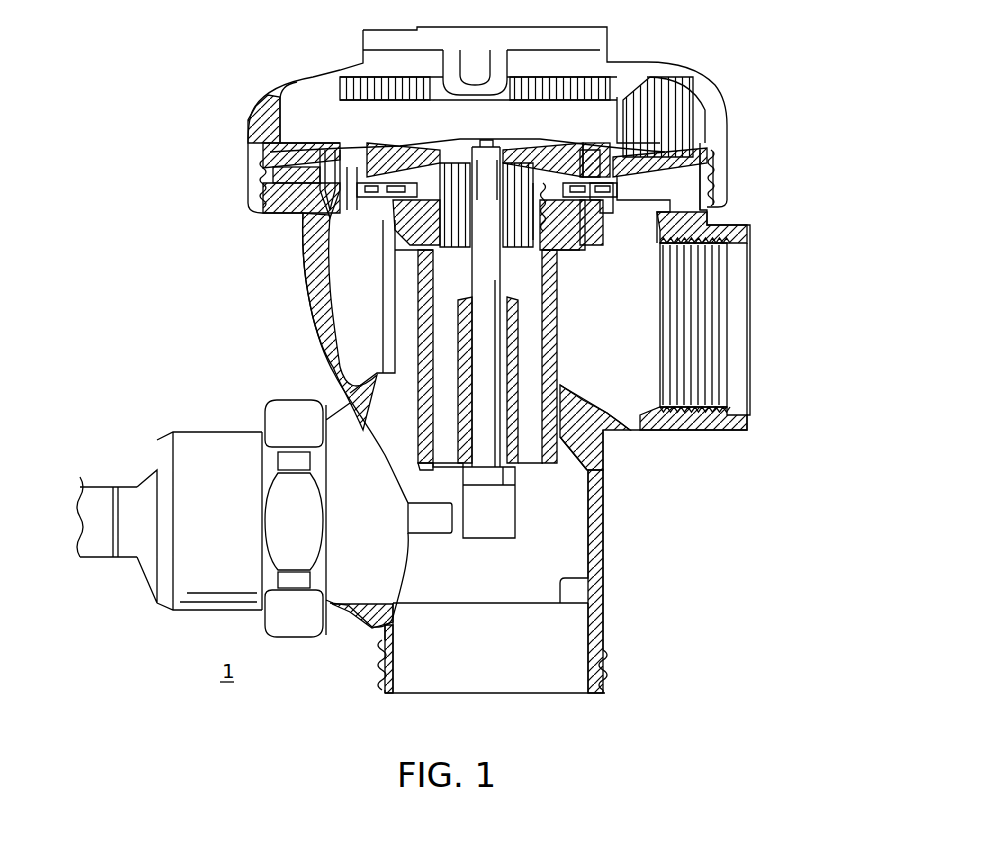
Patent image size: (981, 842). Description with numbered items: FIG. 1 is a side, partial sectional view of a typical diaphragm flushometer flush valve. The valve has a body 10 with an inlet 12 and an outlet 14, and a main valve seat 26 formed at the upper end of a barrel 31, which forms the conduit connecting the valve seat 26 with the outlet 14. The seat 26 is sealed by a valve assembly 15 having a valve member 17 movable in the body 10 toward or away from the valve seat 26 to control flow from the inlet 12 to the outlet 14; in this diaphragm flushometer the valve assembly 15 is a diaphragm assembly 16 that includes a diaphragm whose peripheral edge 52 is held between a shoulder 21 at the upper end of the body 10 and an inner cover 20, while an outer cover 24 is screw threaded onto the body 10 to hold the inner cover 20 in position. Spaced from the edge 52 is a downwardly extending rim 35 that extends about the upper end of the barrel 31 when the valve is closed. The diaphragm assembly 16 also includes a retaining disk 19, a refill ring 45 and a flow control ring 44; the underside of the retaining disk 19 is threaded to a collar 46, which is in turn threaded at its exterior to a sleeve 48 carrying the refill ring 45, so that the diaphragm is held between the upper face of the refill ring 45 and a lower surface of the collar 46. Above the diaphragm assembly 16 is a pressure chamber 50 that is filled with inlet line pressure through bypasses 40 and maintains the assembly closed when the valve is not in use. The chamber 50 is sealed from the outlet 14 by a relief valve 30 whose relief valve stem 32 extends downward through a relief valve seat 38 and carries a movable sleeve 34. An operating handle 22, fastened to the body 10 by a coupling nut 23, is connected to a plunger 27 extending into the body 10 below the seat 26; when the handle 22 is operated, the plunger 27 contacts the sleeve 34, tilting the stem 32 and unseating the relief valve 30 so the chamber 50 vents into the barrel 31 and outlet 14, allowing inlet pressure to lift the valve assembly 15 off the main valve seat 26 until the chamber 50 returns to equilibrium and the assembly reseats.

The body 10 is at (605, 550).
The inlet 12 is at (720, 303).
The outlet 14 is at (613, 680).
The valve assembly 15 is at (385, 205).
The diaphragm assembly 16 is at (668, 155).
The valve member 17 is at (697, 215).
The retaining disk 19 is at (600, 150).
The inner cover 20 is at (655, 113).
The shoulder 21 is at (700, 158).
The operating handle 22 is at (100, 487).
The coupling nut 23 is at (293, 640).
The outer cover 24 is at (340, 72).
The main valve seat 26 is at (593, 212).
The plunger 27 is at (425, 525).
The relief valve 30 is at (539, 136).
The barrel 31 is at (388, 332).
The relief valve stem 32 is at (493, 440).
The movable sleeve 34 is at (512, 533).
The rim 35 is at (600, 207).
The relief valve seat 38 is at (390, 143).
The bypass 40 is at (330, 190).
The flow control ring 44 is at (580, 367).
The refill ring 45 is at (393, 211).
The collar 46 is at (533, 217).
The sleeve 48 is at (570, 460).
The pressure chamber 50 is at (436, 124).
The peripheral edge 52 is at (272, 163).